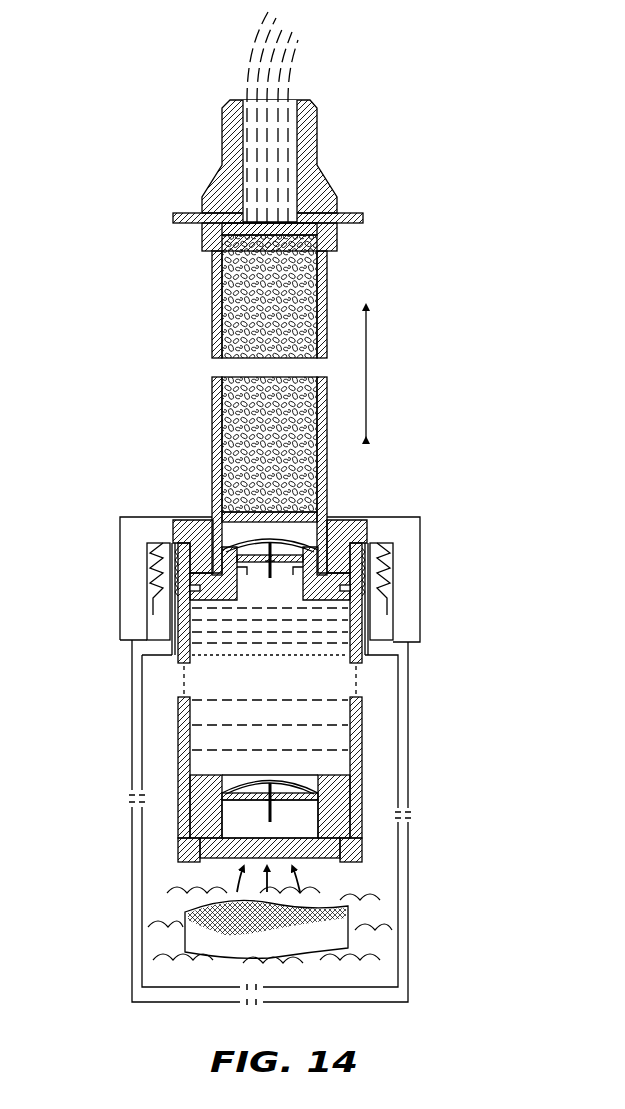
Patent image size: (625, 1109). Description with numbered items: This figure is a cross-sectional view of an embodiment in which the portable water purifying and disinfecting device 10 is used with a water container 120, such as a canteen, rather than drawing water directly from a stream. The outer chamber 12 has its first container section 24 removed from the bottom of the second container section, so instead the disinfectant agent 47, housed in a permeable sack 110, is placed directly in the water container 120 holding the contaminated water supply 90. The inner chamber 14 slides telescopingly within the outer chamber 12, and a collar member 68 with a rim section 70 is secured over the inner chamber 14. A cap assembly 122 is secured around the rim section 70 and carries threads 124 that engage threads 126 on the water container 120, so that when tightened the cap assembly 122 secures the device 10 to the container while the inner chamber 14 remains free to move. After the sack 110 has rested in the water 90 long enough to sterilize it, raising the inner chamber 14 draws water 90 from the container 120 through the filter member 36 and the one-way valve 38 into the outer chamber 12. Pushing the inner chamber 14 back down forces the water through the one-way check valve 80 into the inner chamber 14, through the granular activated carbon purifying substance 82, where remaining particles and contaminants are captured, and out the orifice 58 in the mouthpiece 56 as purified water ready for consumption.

The portable water purifying and disinfecting device 10 is at (100, 361).
The outer chamber 12 is at (363, 715).
The inner chamber 14 is at (328, 290).
The first container section 24 is at (180, 723).
The filter member 36 is at (325, 840).
The one-way check valve 38 is at (300, 785).
The disinfectant agent 47 is at (337, 925).
The mouthpiece 56 is at (318, 137).
The orifice 58 is at (282, 147).
The collar member 68 is at (343, 527).
The rim section 70 is at (190, 523).
The one-way check valve 80 is at (283, 540).
The purifying substance 82 is at (250, 315).
The contaminated water supply 90 is at (332, 700).
The permeable sack 110 is at (197, 940).
The water container 120 is at (137, 745).
The cap assembly 122 is at (413, 530).
The threads 124 is at (390, 597).
The threads 126 is at (163, 575).